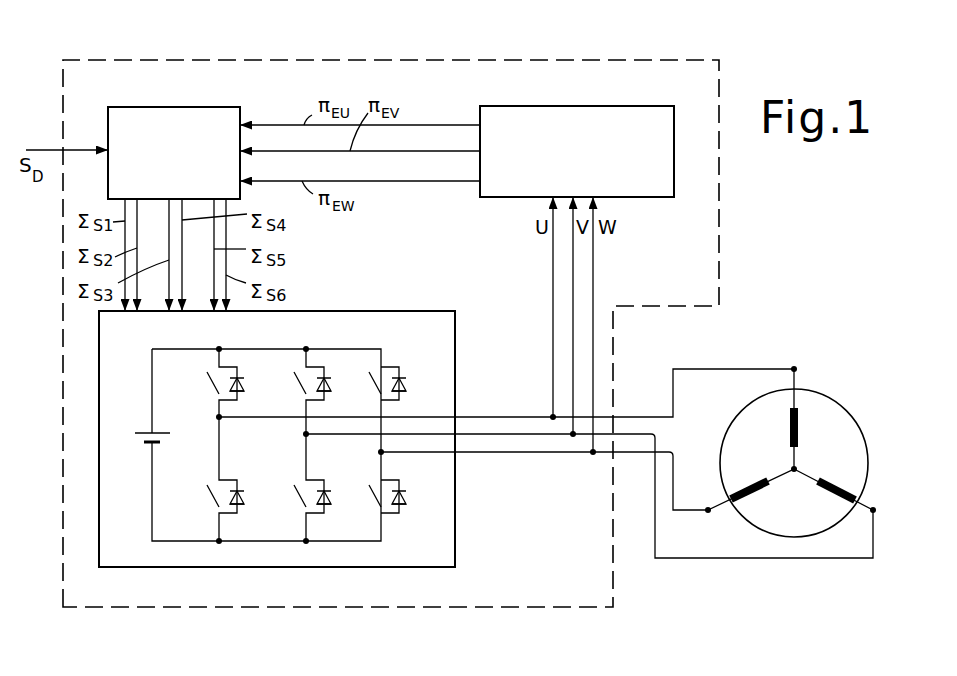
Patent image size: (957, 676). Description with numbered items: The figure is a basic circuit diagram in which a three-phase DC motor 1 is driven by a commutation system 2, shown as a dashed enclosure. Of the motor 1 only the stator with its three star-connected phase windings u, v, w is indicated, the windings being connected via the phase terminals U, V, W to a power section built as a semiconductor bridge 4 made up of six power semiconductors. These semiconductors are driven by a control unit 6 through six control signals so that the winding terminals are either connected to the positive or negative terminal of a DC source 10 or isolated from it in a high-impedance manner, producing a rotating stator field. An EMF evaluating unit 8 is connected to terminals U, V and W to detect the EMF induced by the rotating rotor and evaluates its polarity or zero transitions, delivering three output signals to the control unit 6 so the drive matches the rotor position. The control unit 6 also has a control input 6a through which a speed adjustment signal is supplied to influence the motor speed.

The 3-phase DC motor 1 is at (830, 422).
The commutation system 2 is at (318, 56).
The semiconductor bridge 4 is at (432, 308).
The control unit 6 is at (202, 107).
The control input 6a is at (66, 133).
The EMF evaluating unit 8 is at (648, 105).
The DC source 10 is at (136, 446).